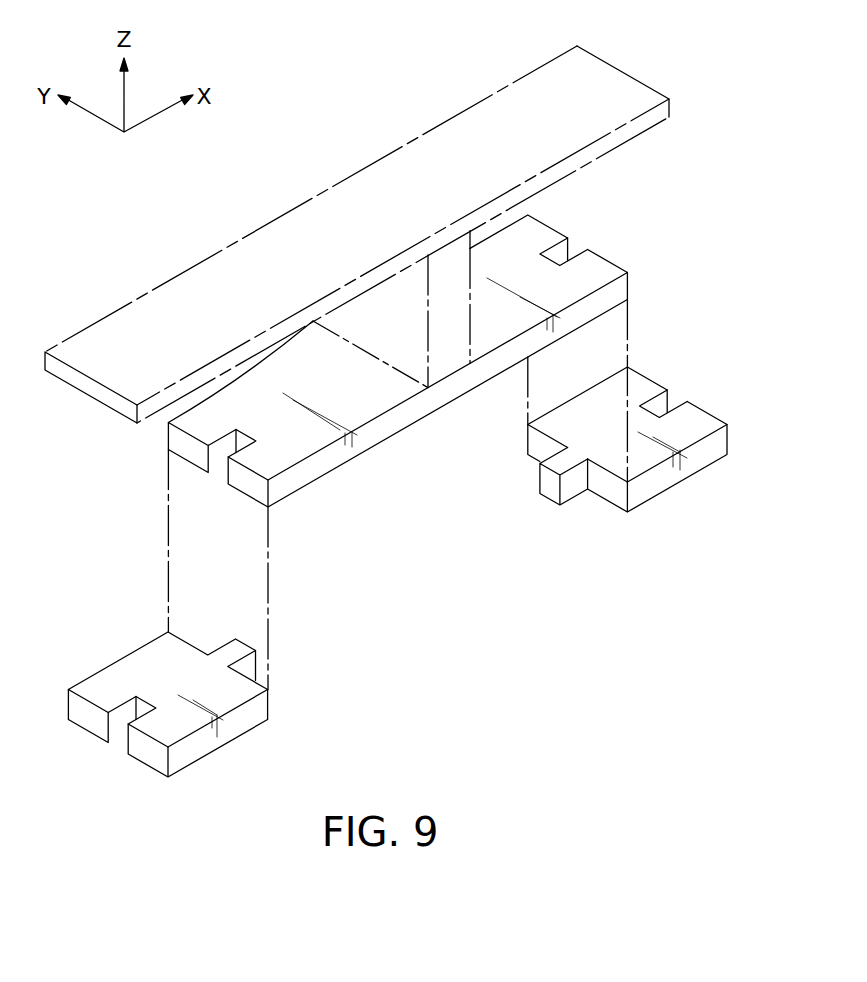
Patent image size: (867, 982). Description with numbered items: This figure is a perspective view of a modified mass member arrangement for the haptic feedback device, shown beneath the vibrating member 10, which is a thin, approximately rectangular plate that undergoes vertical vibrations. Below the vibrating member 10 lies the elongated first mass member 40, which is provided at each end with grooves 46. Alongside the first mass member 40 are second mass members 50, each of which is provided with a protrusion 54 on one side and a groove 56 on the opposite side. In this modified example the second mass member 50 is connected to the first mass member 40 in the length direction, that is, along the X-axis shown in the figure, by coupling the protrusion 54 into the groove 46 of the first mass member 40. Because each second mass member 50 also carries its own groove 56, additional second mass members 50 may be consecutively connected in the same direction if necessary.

The vibrating member 10 is at (603, 92).
The first mass member 40 is at (408, 340).
The groove 46 is at (562, 256).
The second mass member 50 is at (639, 443).
The protrusion 54 is at (573, 488).
The groove 56 is at (663, 410).